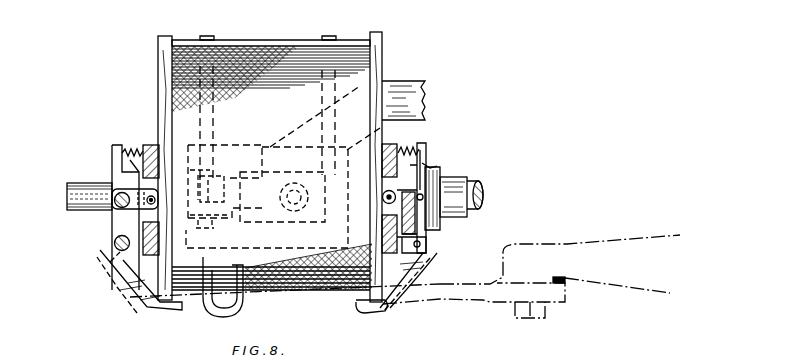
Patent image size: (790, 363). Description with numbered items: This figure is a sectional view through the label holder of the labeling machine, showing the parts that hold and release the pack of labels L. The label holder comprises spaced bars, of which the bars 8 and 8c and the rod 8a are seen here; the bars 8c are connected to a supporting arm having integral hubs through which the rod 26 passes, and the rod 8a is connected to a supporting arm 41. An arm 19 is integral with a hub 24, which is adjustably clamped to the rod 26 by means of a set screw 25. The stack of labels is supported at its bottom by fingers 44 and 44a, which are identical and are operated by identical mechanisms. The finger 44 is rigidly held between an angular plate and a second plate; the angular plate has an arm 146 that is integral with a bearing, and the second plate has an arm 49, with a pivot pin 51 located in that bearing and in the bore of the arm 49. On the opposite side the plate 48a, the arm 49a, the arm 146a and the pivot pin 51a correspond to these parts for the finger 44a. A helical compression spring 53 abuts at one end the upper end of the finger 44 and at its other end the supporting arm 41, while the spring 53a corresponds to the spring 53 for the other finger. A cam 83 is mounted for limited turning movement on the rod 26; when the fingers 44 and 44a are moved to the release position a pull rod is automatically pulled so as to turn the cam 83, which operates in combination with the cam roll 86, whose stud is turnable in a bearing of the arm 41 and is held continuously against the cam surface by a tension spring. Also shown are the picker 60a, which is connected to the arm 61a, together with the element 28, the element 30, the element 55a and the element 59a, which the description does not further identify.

The bar 8 is at (212, 36).
The rod 8a is at (381, 40).
The bar 8c is at (160, 37).
The label L is at (272, 40).
The arm 19 is at (422, 81).
The hub 24 is at (295, 224).
The set screw 25 is at (288, 192).
The rod 26 is at (475, 189).
The shaft 28 is at (69, 185).
The bearing block 30 is at (150, 145).
The supporting arm 41 is at (388, 144).
The finger 44 is at (424, 273).
The finger 44a is at (123, 283).
The plate 48a is at (116, 232).
The arm 49 is at (402, 210).
The arm 49a is at (128, 209).
The pivot pin 51 is at (384, 193).
The pivot pin 51a is at (150, 199).
The helical compression spring 53 is at (414, 150).
The spring 53a is at (132, 152).
The armature frame 55a is at (217, 168).
The U-shaped hook 59a is at (203, 306).
The picker 60a is at (284, 292).
The arm 61a is at (604, 246).
The cam 83 is at (440, 166).
The cam roll 86 is at (434, 166).
The arm 146 is at (418, 236).
The arm 146a is at (215, 212).